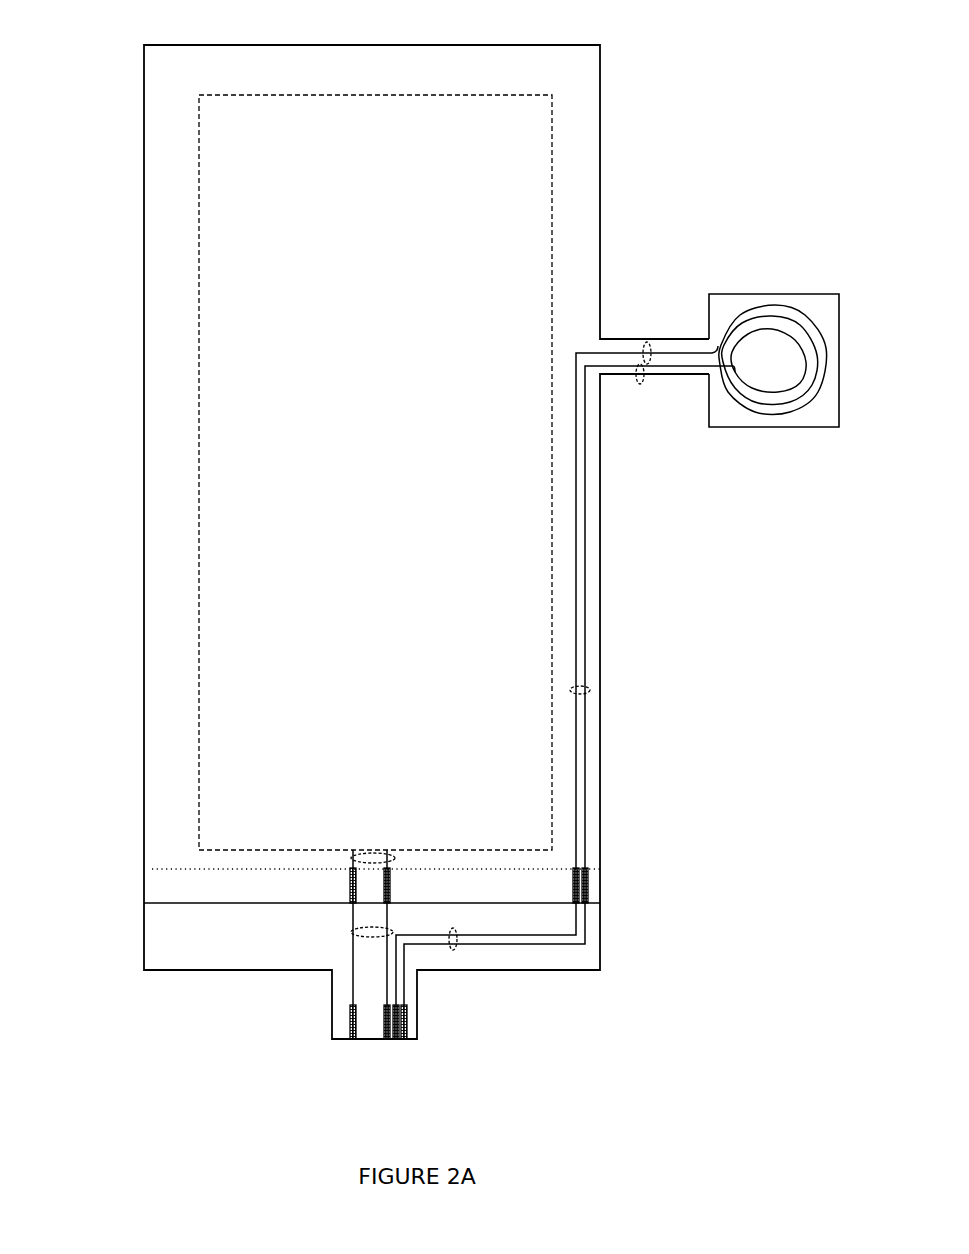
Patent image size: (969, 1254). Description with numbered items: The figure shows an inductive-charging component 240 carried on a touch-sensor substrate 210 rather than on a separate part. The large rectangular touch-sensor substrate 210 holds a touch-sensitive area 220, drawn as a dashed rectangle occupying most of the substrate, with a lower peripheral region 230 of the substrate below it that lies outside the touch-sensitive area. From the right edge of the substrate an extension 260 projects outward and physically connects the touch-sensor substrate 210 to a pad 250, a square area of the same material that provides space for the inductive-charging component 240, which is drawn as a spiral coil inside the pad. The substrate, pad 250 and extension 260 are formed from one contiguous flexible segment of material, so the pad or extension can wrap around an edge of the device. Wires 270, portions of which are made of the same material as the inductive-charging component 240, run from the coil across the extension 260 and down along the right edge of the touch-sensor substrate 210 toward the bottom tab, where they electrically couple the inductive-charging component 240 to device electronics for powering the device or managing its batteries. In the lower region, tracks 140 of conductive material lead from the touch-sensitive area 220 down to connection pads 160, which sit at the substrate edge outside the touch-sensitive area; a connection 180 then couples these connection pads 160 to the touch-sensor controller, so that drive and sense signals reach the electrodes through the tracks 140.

The touch-sensor substrate 210 is at (143, 122).
The touch-sensitive area 220 is at (348, 502).
The peripheral region 230 is at (205, 948).
The inductive-charging component 240 is at (759, 412).
The pad 250 is at (772, 294).
The extension 260 is at (652, 340).
The wires 270 is at (640, 372).
The tracks 140 is at (348, 857).
The connection pads 160 is at (351, 890).
The connection 180 is at (363, 934).